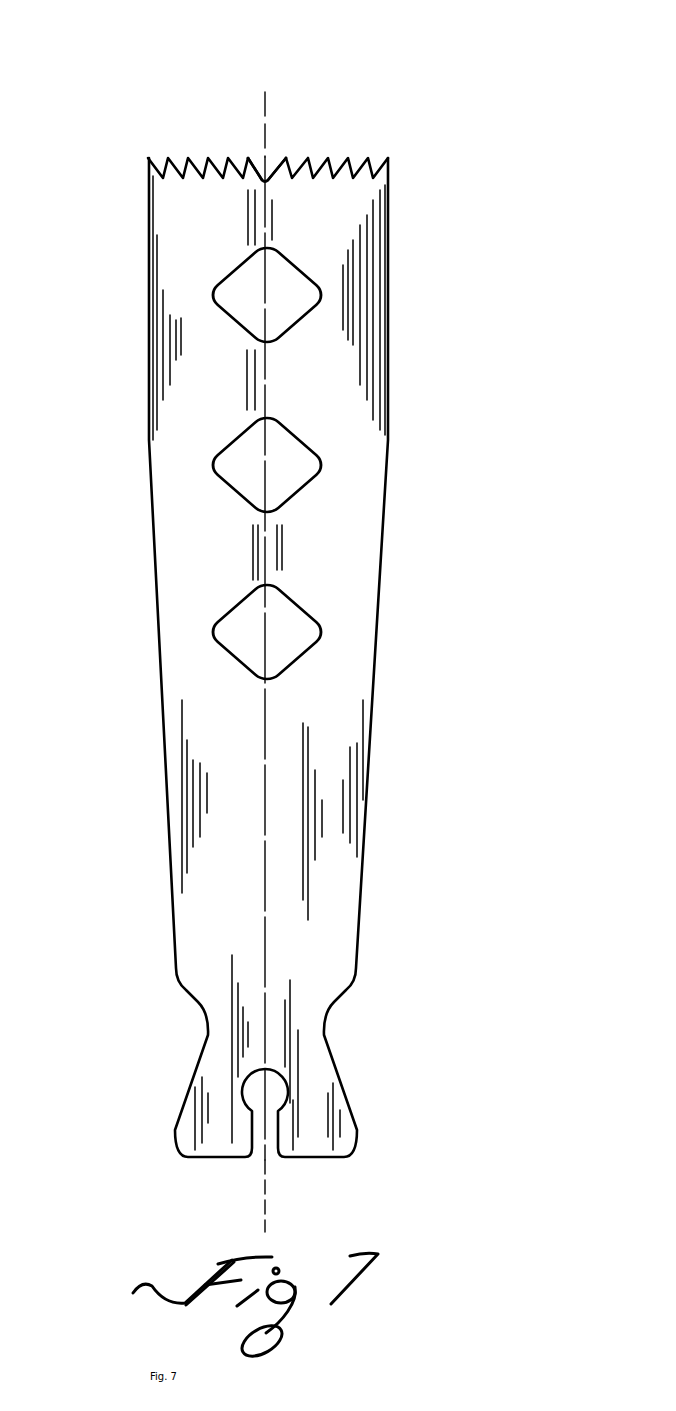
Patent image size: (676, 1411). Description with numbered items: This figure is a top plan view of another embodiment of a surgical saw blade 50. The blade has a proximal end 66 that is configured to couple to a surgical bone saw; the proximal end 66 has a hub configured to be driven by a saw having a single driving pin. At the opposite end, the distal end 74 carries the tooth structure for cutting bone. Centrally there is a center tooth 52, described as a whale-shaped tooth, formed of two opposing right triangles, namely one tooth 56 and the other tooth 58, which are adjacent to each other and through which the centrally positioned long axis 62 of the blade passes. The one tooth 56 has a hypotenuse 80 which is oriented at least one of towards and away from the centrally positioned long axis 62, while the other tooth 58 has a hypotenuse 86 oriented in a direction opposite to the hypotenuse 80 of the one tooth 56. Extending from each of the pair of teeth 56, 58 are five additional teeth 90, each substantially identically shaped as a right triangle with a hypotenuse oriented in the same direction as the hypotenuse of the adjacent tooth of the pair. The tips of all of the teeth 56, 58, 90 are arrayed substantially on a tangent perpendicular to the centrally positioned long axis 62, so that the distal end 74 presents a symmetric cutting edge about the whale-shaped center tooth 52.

The surgical saw blade 50 is at (425, 320).
The center tooth 52 is at (278, 150).
The tooth 56 is at (283, 165).
The tooth 58 is at (247, 172).
The centrally positioned long axis 62 is at (267, 707).
The proximal end 66 is at (345, 1095).
The distal end 74 is at (389, 228).
The hypotenuse 80 is at (280, 175).
The hypotenuse 86 is at (248, 178).
The additional tooth 90 is at (248, 167).